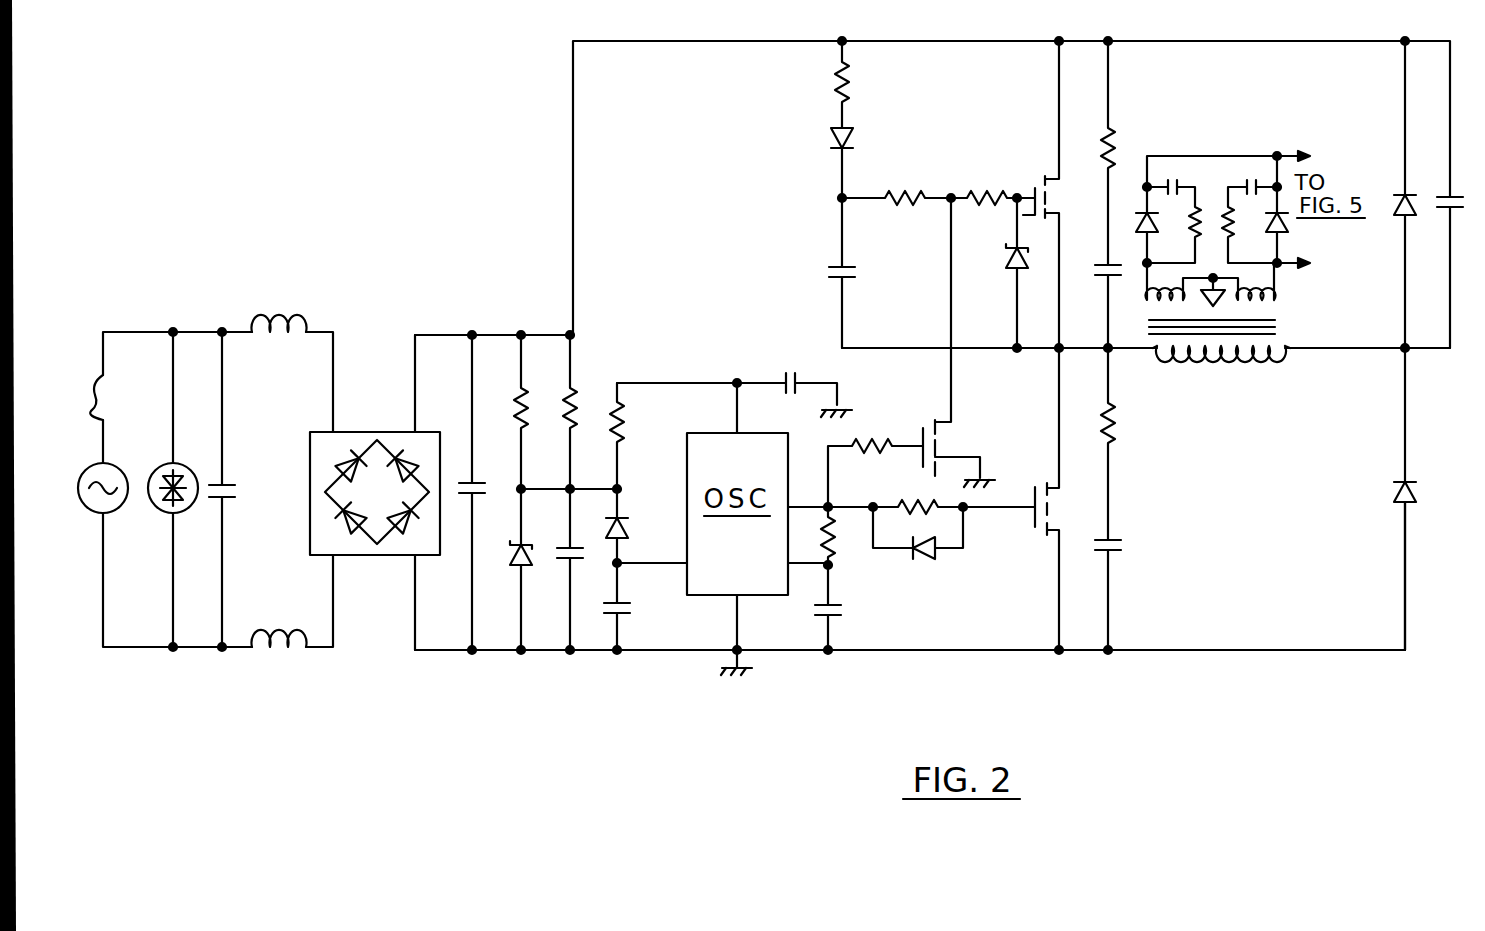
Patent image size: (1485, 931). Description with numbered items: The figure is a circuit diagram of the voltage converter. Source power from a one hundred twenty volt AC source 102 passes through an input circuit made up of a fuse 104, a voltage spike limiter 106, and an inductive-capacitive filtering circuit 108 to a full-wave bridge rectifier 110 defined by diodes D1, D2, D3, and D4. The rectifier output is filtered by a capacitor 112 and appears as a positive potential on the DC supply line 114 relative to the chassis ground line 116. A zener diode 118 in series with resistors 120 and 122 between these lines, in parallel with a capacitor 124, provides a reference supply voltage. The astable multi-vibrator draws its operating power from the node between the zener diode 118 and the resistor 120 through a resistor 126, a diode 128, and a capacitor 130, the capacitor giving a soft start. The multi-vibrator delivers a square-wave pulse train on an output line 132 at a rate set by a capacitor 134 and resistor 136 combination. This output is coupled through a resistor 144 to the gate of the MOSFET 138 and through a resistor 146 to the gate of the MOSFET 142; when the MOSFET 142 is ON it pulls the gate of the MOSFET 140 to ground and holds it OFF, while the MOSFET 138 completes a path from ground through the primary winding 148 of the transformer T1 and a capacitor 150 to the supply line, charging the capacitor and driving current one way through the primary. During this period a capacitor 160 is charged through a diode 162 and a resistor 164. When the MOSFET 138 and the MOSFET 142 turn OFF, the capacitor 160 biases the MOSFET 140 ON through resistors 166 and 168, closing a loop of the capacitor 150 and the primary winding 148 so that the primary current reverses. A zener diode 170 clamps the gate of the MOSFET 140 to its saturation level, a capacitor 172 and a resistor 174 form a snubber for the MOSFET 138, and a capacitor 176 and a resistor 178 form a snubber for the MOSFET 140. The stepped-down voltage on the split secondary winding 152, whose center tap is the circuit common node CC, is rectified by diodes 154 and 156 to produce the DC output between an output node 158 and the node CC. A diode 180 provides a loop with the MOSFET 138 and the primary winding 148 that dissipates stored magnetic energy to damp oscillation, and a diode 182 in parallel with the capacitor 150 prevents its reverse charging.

The source 102 is at (115, 470).
The fuse 104 is at (110, 392).
The voltage spike limiter 106 is at (163, 514).
The inductive-capacitive filtering circuit 108 is at (272, 408).
The full-wave bridge rectifier 110 is at (340, 475).
The diode D1 is at (335, 457).
The diode D2 is at (342, 530).
The diode D3 is at (412, 462).
The diode D4 is at (405, 526).
The capacitor 112 is at (466, 497).
The DC supply line 114 is at (507, 333).
The chassis ground line 116 is at (600, 652).
The zener diode 118 is at (514, 562).
The resistor 120 is at (515, 408).
The resistor 122 is at (565, 410).
The capacitor 124 is at (565, 562).
The resistor 126 is at (633, 410).
The diode 128 is at (626, 518).
The capacitor 130 is at (628, 615).
The output line 132 is at (800, 505).
The capacitor 134 is at (822, 618).
The resistor 136 is at (833, 540).
The MOSFET 138 is at (1038, 535).
The MOSFET 140 is at (1042, 172).
The MOSFET 142 is at (958, 442).
The resistor 144 is at (935, 507).
The resistor 146 is at (893, 450).
The primary winding 148 is at (1198, 357).
The capacitor 150 is at (1445, 192).
The secondary winding 152 is at (1265, 290).
The rectifying diode 154 is at (1145, 210).
The rectifying diode 156 is at (1290, 222).
The output node 158 is at (1277, 154).
The capacitor 160 is at (830, 268).
The diode 162 is at (838, 140).
The resistor 164 is at (838, 78).
The resistor 166 is at (1000, 195).
The resistor 168 is at (905, 195).
The zener diode 170 is at (1010, 252).
The capacitor 172 is at (1115, 550).
The resistor 174 is at (1115, 432).
The capacitor 176 is at (1113, 278).
The resistor 178 is at (1125, 122).
The diode 180 is at (1393, 490).
The diode 182 is at (1428, 352).
The circuit common node CC is at (1300, 334).
The transformer T1 is at (1292, 353).